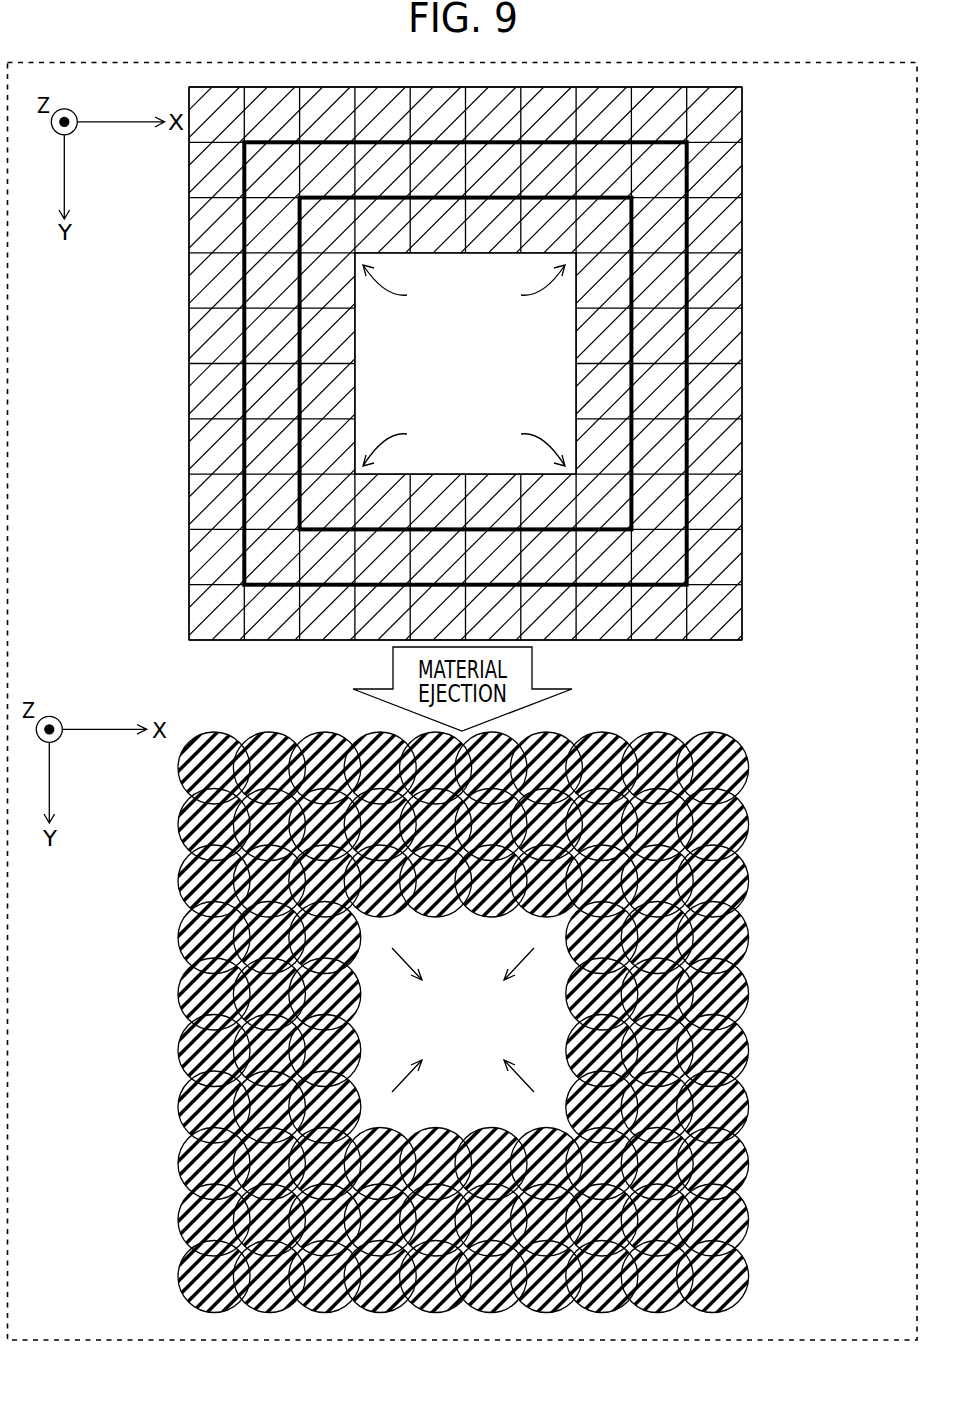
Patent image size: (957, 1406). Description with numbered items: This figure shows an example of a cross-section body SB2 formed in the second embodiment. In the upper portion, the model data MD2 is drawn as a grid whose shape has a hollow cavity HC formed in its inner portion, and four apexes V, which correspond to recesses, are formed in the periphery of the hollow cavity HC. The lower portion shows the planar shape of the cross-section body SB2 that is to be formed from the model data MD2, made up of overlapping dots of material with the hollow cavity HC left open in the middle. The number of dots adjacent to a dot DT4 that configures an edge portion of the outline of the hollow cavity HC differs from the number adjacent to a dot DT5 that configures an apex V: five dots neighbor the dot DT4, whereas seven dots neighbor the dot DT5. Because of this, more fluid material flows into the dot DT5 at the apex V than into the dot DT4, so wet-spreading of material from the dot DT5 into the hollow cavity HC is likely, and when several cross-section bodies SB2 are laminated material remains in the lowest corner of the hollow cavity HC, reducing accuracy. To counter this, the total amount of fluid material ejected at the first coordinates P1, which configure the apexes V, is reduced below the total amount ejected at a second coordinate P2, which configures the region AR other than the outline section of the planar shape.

The model data MD2 is at (764, 197).
The first coordinates P1 is at (601, 222).
The second coordinate P2 is at (651, 523).
The region AR is at (686, 506).
The hollow cavity HC is at (478, 370).
The apex V is at (464, 365).
The cross-section body SB2 is at (764, 747).
The dot DT5 is at (722, 878).
The dot DT4 is at (737, 998).